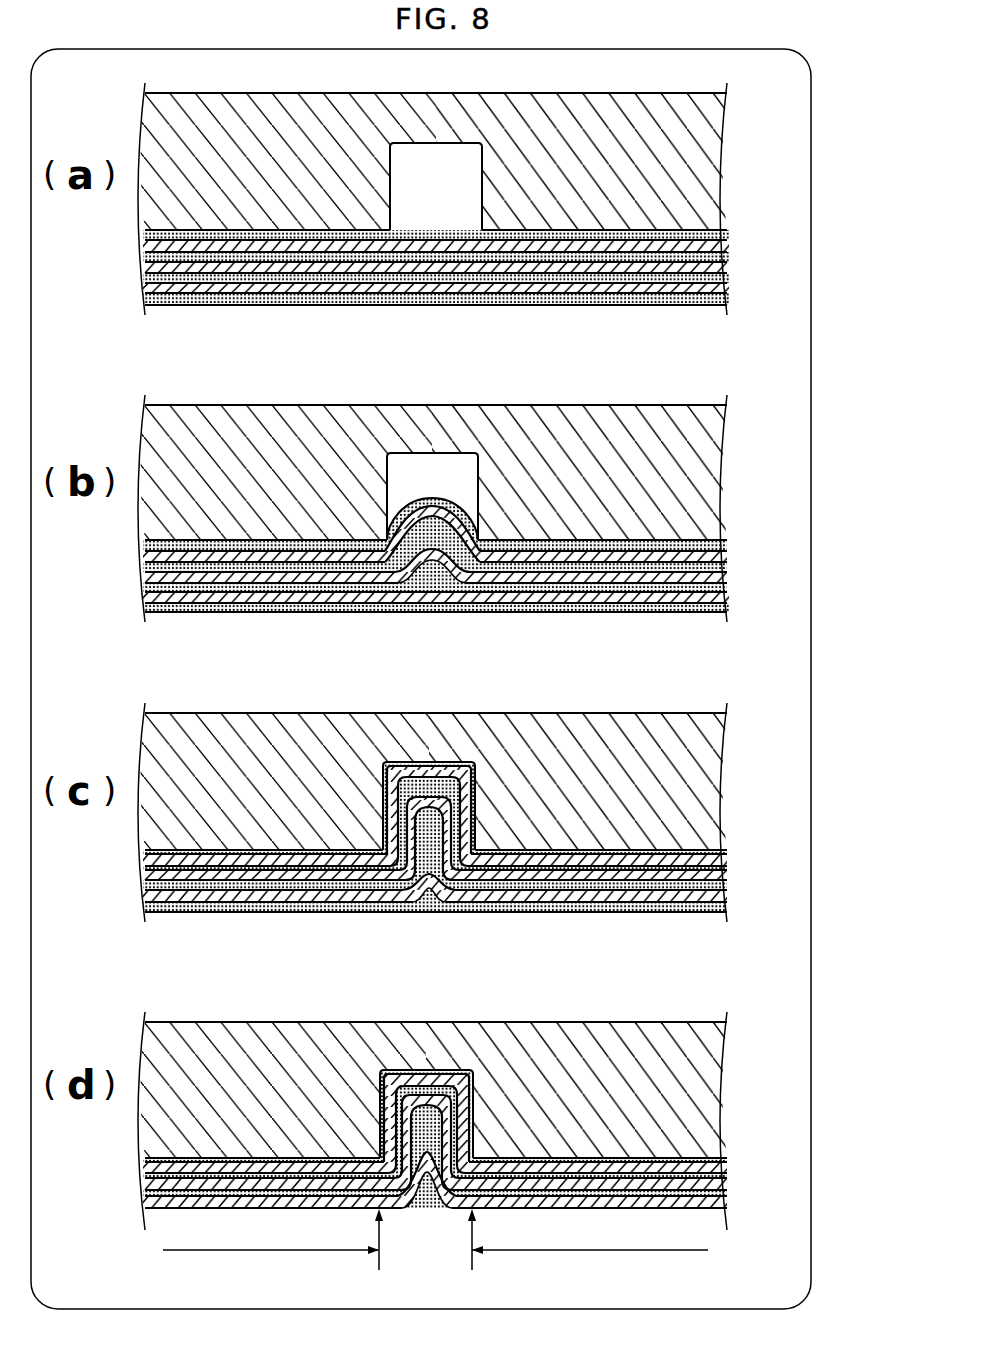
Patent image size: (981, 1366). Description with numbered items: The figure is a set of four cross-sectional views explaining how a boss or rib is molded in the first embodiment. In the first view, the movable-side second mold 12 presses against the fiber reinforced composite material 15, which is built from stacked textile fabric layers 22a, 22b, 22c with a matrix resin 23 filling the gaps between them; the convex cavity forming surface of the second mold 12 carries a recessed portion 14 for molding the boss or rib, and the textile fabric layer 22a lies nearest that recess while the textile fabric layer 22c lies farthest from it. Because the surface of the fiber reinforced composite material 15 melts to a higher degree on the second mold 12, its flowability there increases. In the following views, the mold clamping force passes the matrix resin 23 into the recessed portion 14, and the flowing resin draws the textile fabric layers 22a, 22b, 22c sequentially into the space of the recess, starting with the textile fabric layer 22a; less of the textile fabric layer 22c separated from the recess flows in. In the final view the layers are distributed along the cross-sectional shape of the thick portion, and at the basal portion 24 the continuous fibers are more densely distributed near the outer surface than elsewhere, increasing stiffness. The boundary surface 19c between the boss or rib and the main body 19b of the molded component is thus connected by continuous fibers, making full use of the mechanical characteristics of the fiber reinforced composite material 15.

The second mold 12 is at (688, 93).
The recessed portion 14 is at (433, 180).
The fiber reinforced composite material 15 is at (449, 711).
The main body 19b is at (230, 1250).
The boundary surface 19c is at (424, 1251).
The textile fabric layer 22a is at (728, 247).
The textile fabric layer 22b is at (728, 270).
The textile fabric layer 22c is at (728, 292).
The matrix resin 23 is at (728, 236).
The basal portion 24 is at (377, 1128).